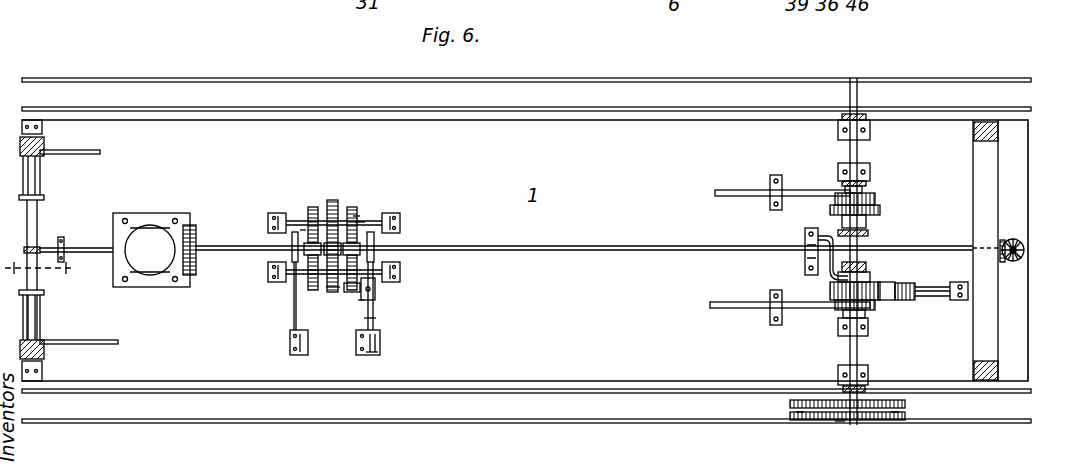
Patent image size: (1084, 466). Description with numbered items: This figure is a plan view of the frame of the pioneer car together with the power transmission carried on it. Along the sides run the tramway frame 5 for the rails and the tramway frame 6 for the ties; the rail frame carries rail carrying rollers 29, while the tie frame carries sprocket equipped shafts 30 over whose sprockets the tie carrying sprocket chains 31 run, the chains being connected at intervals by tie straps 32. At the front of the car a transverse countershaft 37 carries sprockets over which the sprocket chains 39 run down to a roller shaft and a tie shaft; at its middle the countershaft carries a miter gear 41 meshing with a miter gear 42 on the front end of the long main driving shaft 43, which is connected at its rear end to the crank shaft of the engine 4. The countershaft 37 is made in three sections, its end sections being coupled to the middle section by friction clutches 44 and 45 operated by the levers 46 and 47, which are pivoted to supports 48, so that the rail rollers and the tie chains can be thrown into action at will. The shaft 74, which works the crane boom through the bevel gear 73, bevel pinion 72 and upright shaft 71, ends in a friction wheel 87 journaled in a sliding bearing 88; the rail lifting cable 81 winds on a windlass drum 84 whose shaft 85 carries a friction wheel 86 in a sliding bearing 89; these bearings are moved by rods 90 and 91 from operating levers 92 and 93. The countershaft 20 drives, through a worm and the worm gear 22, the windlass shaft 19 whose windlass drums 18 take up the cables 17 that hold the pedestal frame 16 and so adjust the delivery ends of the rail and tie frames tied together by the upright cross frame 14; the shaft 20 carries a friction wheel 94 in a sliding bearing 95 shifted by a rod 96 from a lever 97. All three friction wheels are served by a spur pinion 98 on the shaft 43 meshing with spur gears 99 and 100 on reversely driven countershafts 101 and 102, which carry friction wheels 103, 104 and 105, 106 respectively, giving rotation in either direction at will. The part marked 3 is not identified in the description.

The vertical shaft 3 is at (30, 181).
The engine 4 is at (161, 238).
The tramway frame for the rails 5 is at (995, 80).
The tramway frame for the ties 6 is at (999, 424).
The upright skeleton cross frame 14 is at (47, 259).
The pedestal frame 16 is at (1000, 139).
The cables or guy ropes 17 is at (92, 155).
The windlass drums 18 is at (38, 325).
The windlass shaft 19 is at (37, 225).
The countershaft 20 is at (84, 247).
The worm gear 22 is at (36, 251).
The rail carrying rollers 29 is at (858, 96).
The sprocket equipped shafts 30 is at (905, 410).
The tie carrying sprocket chains 31 is at (838, 421).
The tie straps 32 is at (800, 412).
The transverse countershaft 37 is at (860, 150).
The sprocket chains 39 is at (866, 117).
The miter gear 41 is at (869, 234).
The miter gear 42 is at (805, 262).
The main driving shaft 43 is at (712, 252).
The friction clutch 44 is at (876, 200).
The friction clutch 45 is at (866, 313).
The lever 46 is at (791, 190).
The lever 47 is at (777, 309).
The supports 48 is at (770, 200).
The shaft 71 is at (1022, 258).
The bevel pinion 72 is at (1023, 245).
The bevel gear 73 is at (1003, 244).
The shaft 74 is at (945, 249).
The rail lifting cable 81 is at (905, 301).
The windlass drum 84 is at (957, 300).
The shaft 85 is at (558, 252).
The friction wheel 86 is at (377, 318).
The friction wheel 87 is at (357, 216).
The sliding bearing 88 is at (375, 242).
The sliding bearing 89 is at (378, 300).
The rod 90 is at (373, 322).
The rod 91 is at (360, 300).
The operating lever 92 is at (380, 348).
The operating lever 93 is at (372, 355).
The friction wheel 94 is at (303, 230).
The sliding bearing 95 is at (292, 240).
The rod 96 is at (294, 312).
The operating lever 97 is at (291, 345).
The spur pinion 98 is at (333, 205).
The spur gear 99 is at (352, 210).
The spur gear 100 is at (330, 287).
The countershaft 101 is at (393, 215).
The countershaft 102 is at (380, 284).
The friction wheel 103 is at (360, 222).
The friction wheel 104 is at (312, 208).
The friction wheel 105 is at (345, 287).
The friction wheel 106 is at (308, 278).